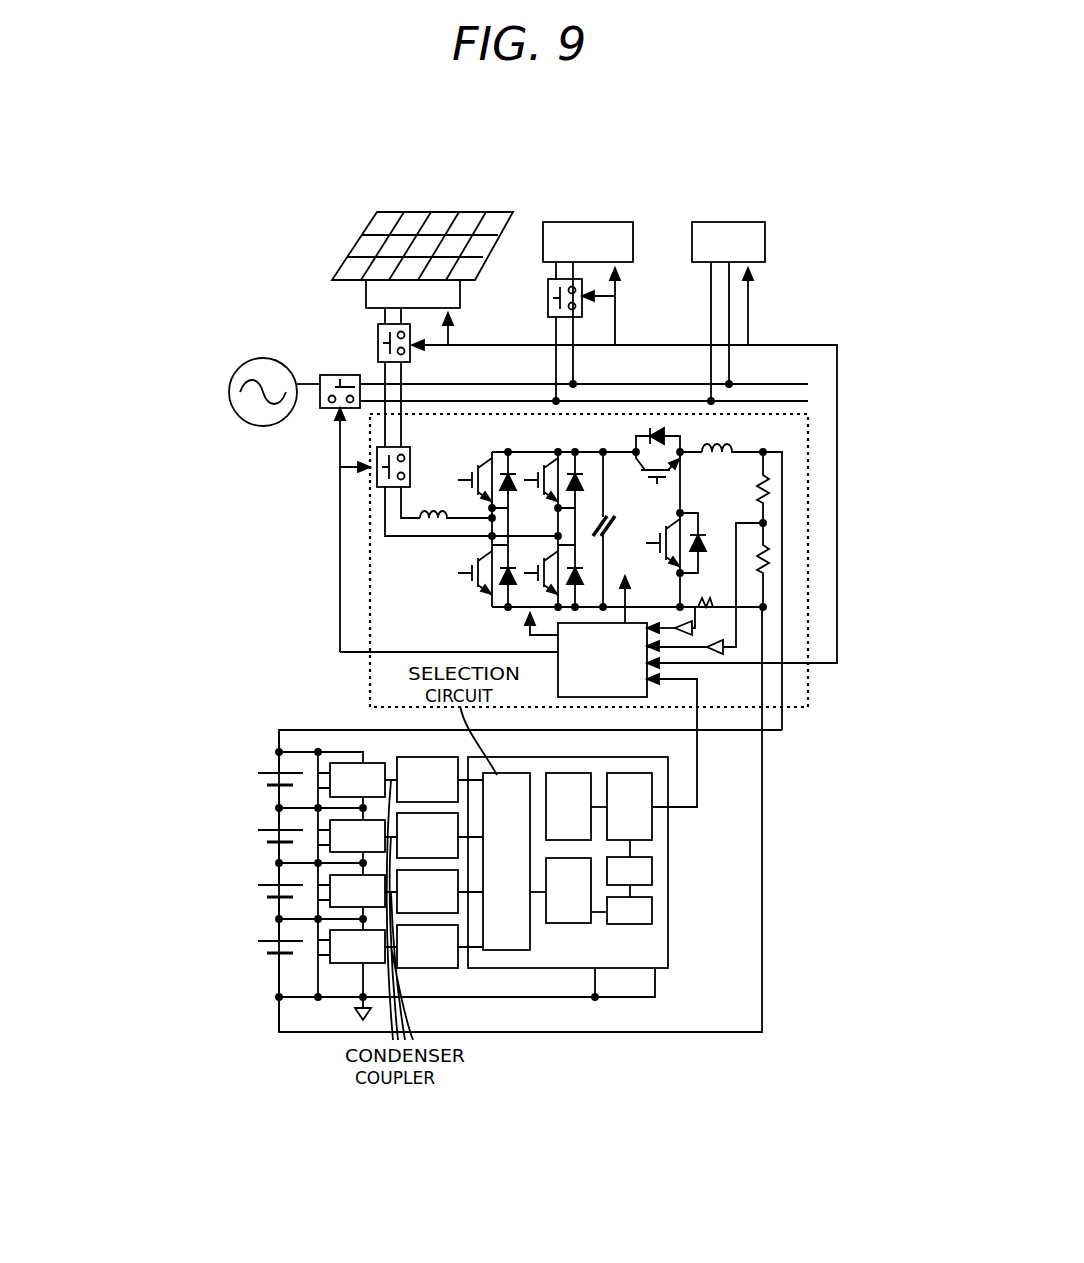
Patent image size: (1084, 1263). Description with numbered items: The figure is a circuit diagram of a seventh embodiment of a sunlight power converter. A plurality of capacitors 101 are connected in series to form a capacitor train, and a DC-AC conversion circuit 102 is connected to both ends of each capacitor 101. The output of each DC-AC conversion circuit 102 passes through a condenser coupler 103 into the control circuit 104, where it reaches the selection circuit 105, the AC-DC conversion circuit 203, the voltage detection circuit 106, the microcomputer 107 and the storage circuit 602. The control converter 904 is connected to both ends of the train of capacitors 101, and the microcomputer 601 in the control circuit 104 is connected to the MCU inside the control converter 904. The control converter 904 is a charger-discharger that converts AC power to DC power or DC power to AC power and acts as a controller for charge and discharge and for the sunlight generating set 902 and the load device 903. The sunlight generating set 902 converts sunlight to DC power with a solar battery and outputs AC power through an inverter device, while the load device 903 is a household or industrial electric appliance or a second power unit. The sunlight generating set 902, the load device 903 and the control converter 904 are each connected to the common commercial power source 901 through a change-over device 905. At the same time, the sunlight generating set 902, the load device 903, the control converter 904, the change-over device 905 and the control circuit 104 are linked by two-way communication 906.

The capacitor 101 is at (260, 953).
The DC-AC conversion circuit 102 is at (330, 948).
The condenser coupler 103 is at (440, 862).
The control circuit 104 is at (668, 925).
The selection circuit 105 is at (514, 861).
The voltage detection circuit 106 is at (638, 924).
The microcomputer 107 is at (652, 868).
The AC-DC conversion circuit 203 is at (562, 923).
The microcomputer 601 is at (652, 818).
The storage circuit 602 is at (578, 773).
The commercial power source 901 is at (259, 359).
The sunlight generating set 902 is at (437, 212).
The load device 903 is at (572, 222).
The control converter 904 is at (370, 628).
The change-over device 905 is at (330, 410).
The two-way communication 906 is at (837, 380).